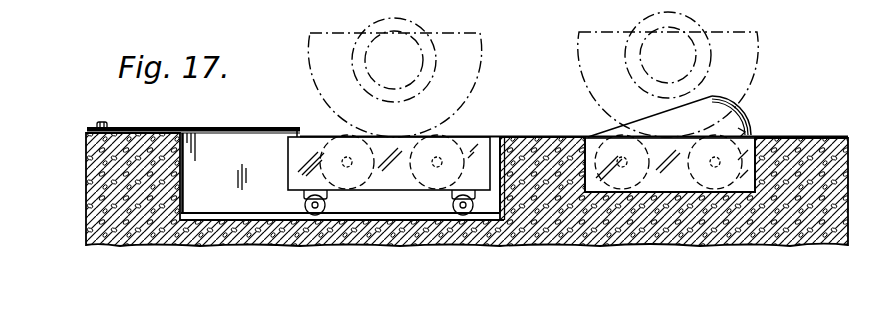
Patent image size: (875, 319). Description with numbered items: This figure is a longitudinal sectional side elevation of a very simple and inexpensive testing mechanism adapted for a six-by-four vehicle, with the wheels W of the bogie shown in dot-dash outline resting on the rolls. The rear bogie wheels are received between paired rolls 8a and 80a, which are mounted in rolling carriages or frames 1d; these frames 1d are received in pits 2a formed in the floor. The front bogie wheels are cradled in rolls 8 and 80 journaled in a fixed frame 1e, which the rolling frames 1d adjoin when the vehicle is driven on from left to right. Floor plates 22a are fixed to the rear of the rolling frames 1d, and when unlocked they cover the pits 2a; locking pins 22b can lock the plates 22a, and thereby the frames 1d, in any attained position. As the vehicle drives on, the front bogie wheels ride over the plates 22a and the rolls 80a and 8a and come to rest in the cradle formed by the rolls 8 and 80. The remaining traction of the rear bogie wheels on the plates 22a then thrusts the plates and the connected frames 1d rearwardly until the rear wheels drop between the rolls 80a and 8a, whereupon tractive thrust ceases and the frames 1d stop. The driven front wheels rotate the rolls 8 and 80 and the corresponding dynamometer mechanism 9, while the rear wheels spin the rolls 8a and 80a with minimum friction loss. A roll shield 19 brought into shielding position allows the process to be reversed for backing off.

The coil W is at (760, 50).
The locking pins 22b is at (117, 128).
The floor plates 22a is at (216, 127).
The pits 2a is at (232, 178).
The rolling frames 1d is at (305, 135).
The roll 80a is at (352, 141).
The roll 8a is at (455, 141).
The fixed frame 1e is at (590, 137).
The roll 80 is at (616, 148).
The roll 8 is at (758, 135).
The dynamometer mechanism 9 is at (700, 134).
The hook 19 is at (752, 131).